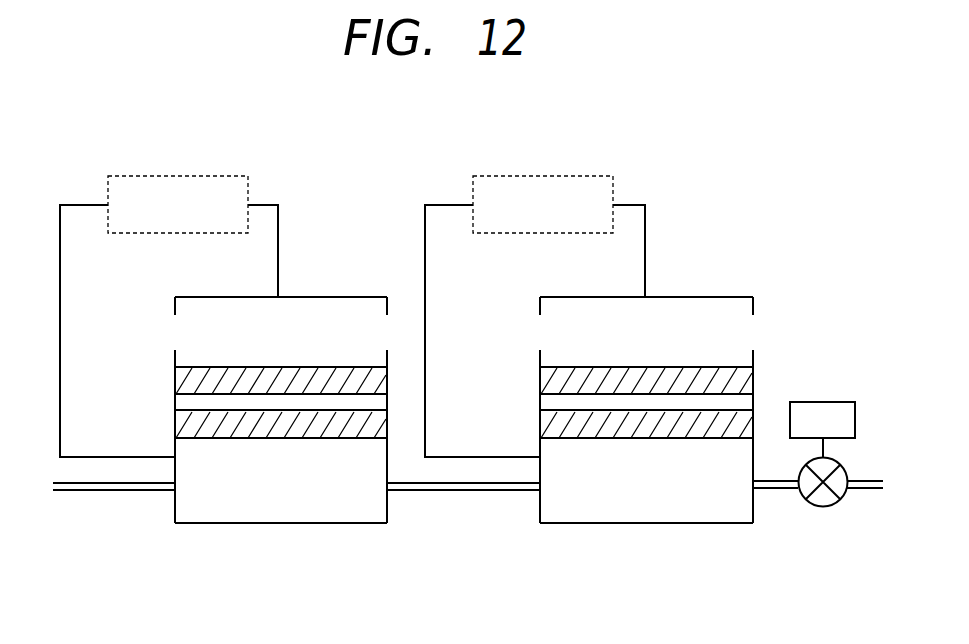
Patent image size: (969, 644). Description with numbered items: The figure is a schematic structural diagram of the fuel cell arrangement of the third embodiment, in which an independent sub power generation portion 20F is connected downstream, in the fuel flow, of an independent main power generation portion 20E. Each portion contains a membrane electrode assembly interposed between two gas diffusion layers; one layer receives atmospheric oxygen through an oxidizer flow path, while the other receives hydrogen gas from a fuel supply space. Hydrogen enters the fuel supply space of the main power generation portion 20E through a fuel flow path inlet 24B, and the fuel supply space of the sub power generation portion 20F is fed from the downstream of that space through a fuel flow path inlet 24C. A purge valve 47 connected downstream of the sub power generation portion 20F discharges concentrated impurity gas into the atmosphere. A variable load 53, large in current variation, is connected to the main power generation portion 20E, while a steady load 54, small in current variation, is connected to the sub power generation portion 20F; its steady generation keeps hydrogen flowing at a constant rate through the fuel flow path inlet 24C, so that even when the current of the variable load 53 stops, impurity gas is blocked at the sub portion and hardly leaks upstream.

The main power generation portion 20E is at (334, 250).
The sub power generation portion 20F is at (703, 250).
The variable load 53 is at (224, 176).
The steady load 54 is at (588, 176).
The fuel flow path inlet 24B is at (150, 487).
The fuel flow path inlet 24C is at (513, 487).
The purge valve 47 is at (842, 402).